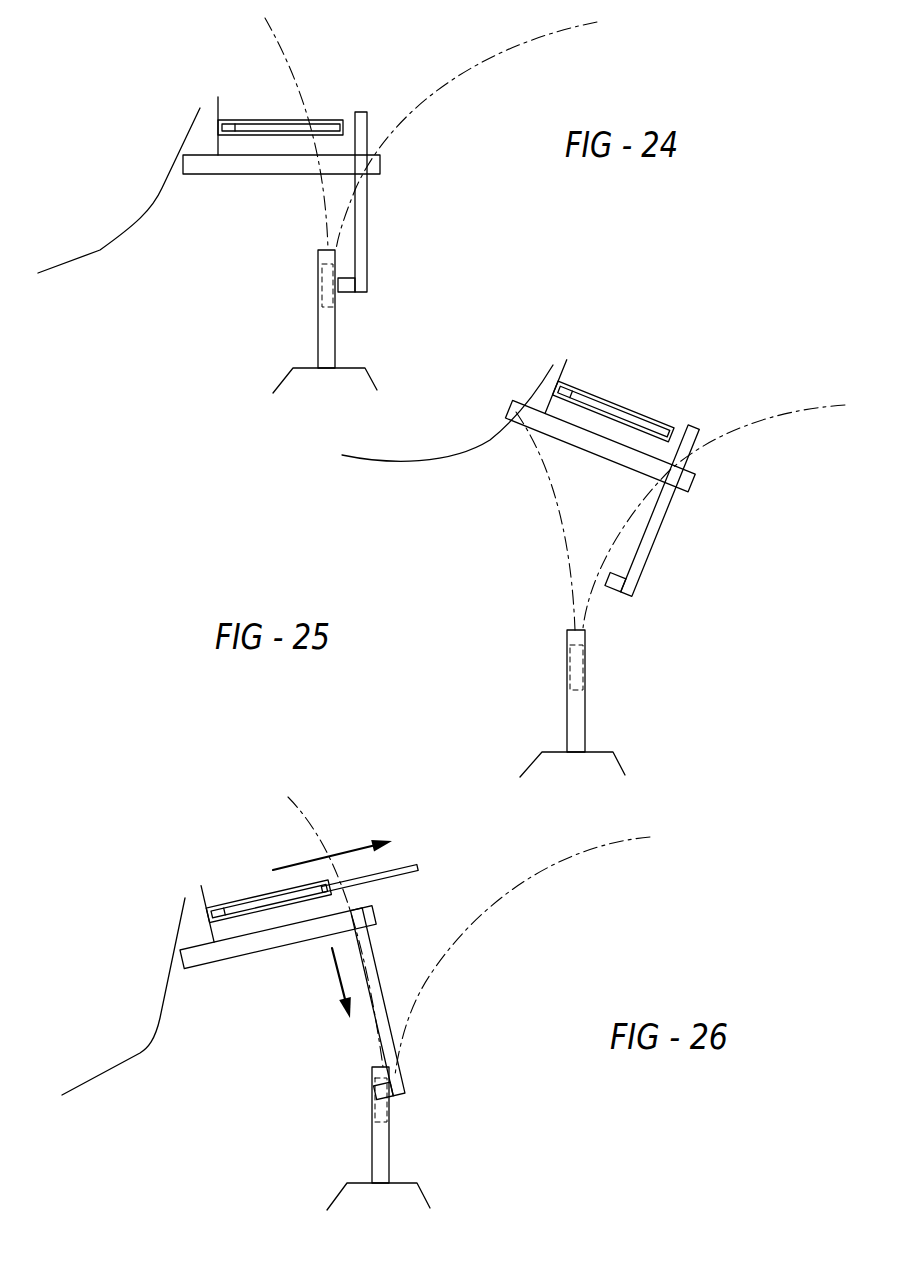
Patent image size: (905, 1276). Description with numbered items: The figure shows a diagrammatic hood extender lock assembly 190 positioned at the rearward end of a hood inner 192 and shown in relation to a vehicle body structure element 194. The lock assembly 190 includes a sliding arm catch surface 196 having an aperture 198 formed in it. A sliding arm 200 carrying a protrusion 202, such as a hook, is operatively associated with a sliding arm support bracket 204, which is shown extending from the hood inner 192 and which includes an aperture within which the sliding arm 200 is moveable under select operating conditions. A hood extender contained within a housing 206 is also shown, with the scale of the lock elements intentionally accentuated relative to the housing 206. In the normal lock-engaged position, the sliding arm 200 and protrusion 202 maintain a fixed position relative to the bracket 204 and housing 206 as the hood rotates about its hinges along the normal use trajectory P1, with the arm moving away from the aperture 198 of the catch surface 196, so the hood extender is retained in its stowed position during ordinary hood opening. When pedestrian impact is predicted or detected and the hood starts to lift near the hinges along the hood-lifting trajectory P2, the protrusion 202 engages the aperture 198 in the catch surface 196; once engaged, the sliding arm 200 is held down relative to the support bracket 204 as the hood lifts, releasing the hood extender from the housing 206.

In FIG. 24, the hood extender lock assembly 190 is at (359, 75).
In FIG. 25, the hood extender lock assembly 190 is at (627, 352).
In FIG. 26, the hood extender lock assembly 190 is at (282, 1005).
In FIG. 24, the hood inner 192 is at (98, 253).
In FIG. 25, the hood inner 192 is at (382, 463).
In FIG. 26, the hood inner 192 is at (107, 1068).
In FIG. 24, the vehicle body structure element 194 is at (305, 368).
In FIG. 25, the vehicle body structure element 194 is at (560, 752).
In FIG. 26, the vehicle body structure element 194 is at (367, 1183).
In FIG. 24, the sliding arm catch surface 196 is at (325, 345).
In FIG. 25, the sliding arm catch surface 196 is at (575, 727).
In FIG. 26, the sliding arm catch surface 196 is at (378, 1163).
In FIG. 24, the aperture 198 is at (327, 277).
In FIG. 25, the aperture 198 is at (578, 663).
In FIG. 26, the aperture 198 is at (380, 1108).
In FIG. 24, the sliding arm 200 is at (368, 215).
In FIG. 25, the sliding arm 200 is at (653, 537).
In FIG. 26, the sliding arm 200 is at (397, 1060).
In FIG. 24, the protrusion 202 is at (343, 287).
In FIG. 25, the protrusion 202 is at (617, 593).
In FIG. 26, the protrusion 202 is at (393, 1097).
In FIG. 24, the sliding arm support bracket 204 is at (268, 163).
In FIG. 25, the sliding arm support bracket 204 is at (623, 455).
In FIG. 26, the sliding arm support bracket 204 is at (262, 943).
In FIG. 24, the hood extender housing 206 is at (258, 120).
In FIG. 25, the hood extender housing 206 is at (615, 404).
In FIG. 26, the hood extender housing 206 is at (260, 897).
In FIG. 24, the normal use trajectory P1 is at (468, 58).
In FIG. 25, the normal use trajectory P1 is at (723, 438).
In FIG. 26, the normal use trajectory P1 is at (485, 902).
In FIG. 24, the hood-lifting trajectory P2 is at (272, 30).
In FIG. 25, the hood-lifting trajectory P2 is at (565, 508).
In FIG. 26, the hood-lifting trajectory P2 is at (312, 826).